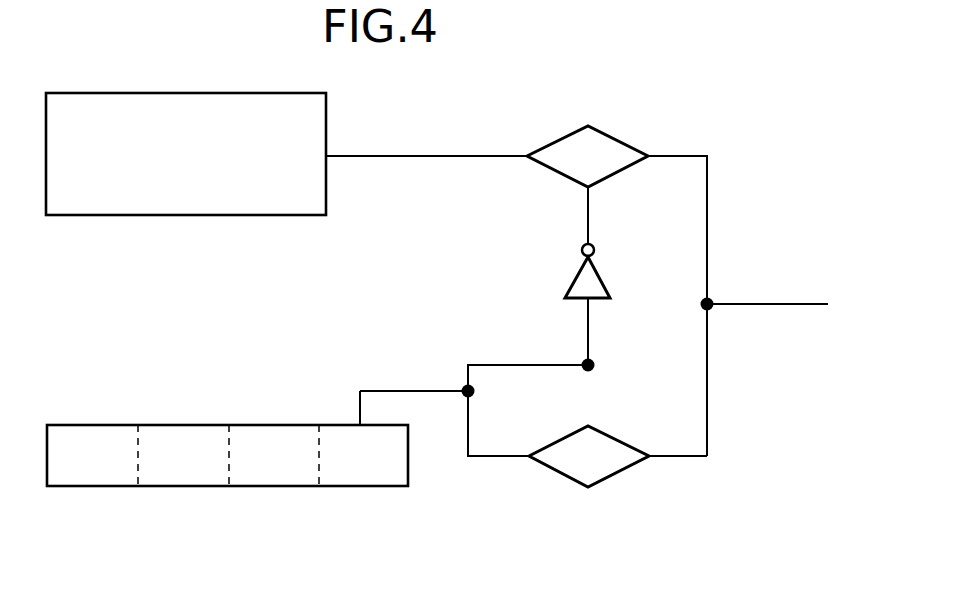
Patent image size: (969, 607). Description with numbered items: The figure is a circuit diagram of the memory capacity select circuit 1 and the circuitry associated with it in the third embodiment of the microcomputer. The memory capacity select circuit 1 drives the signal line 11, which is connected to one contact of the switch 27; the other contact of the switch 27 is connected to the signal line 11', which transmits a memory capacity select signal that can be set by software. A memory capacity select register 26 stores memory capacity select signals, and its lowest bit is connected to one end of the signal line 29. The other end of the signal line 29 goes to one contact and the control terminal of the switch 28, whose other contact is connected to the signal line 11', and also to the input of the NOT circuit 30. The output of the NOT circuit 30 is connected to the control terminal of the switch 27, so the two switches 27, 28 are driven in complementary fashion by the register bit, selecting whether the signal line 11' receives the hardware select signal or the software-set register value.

The memory capacity select circuit 1 is at (213, 93).
The signal line 11 is at (426, 132).
The signal line 11' is at (765, 277).
The memory capacity select register 26 is at (176, 425).
The switch 27 is at (611, 138).
The switch 28 is at (622, 441).
The signal line 29 is at (501, 457).
The NOT circuit 30 is at (568, 286).